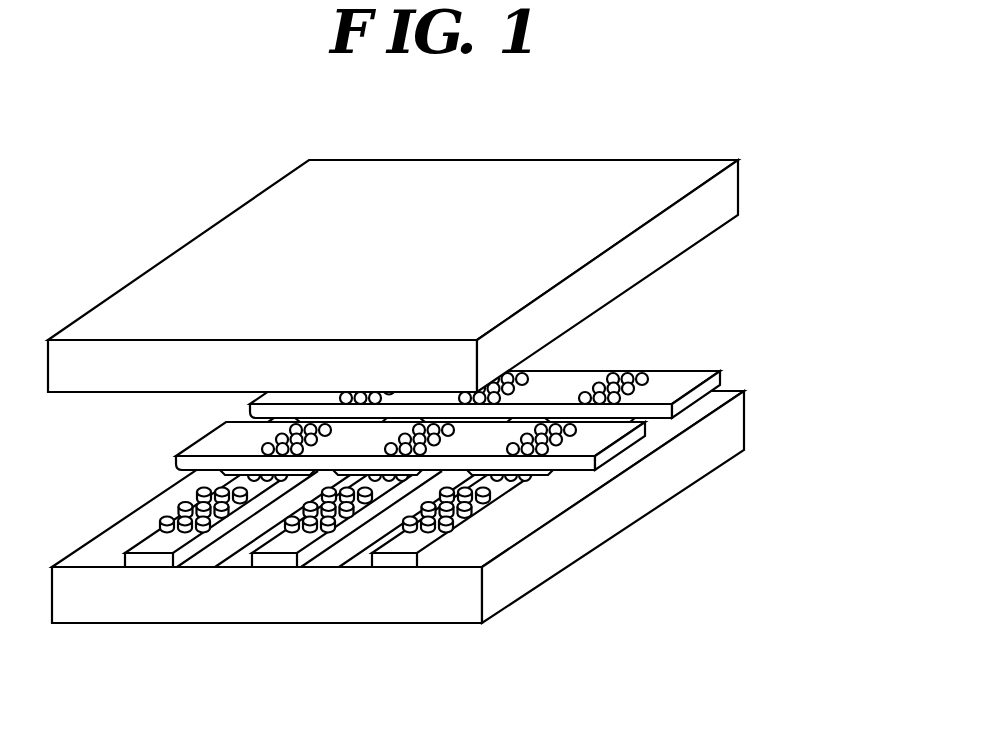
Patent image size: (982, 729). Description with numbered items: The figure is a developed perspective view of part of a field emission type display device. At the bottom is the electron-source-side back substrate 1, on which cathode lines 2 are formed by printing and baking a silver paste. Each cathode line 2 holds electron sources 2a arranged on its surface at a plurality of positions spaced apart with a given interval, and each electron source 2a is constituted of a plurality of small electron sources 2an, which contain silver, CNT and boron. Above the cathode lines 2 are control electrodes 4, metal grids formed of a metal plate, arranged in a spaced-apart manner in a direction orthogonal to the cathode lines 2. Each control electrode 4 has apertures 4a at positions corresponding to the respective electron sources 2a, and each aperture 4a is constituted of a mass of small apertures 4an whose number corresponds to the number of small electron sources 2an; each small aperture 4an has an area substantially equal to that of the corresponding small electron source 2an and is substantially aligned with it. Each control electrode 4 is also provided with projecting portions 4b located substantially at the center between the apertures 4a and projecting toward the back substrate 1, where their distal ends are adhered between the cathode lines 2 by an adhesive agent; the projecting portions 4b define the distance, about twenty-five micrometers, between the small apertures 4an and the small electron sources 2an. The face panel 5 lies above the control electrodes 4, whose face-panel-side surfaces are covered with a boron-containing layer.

The back substrate 1 is at (530, 604).
The cathode line 2 is at (148, 562).
The electron source 2a is at (304, 532).
The small electron source 2an is at (167, 516).
The control electrode 4 is at (448, 501).
The aperture 4a is at (557, 447).
The small aperture 4an is at (630, 377).
The projecting portion 4b is at (213, 567).
The face panel 5 is at (632, 168).